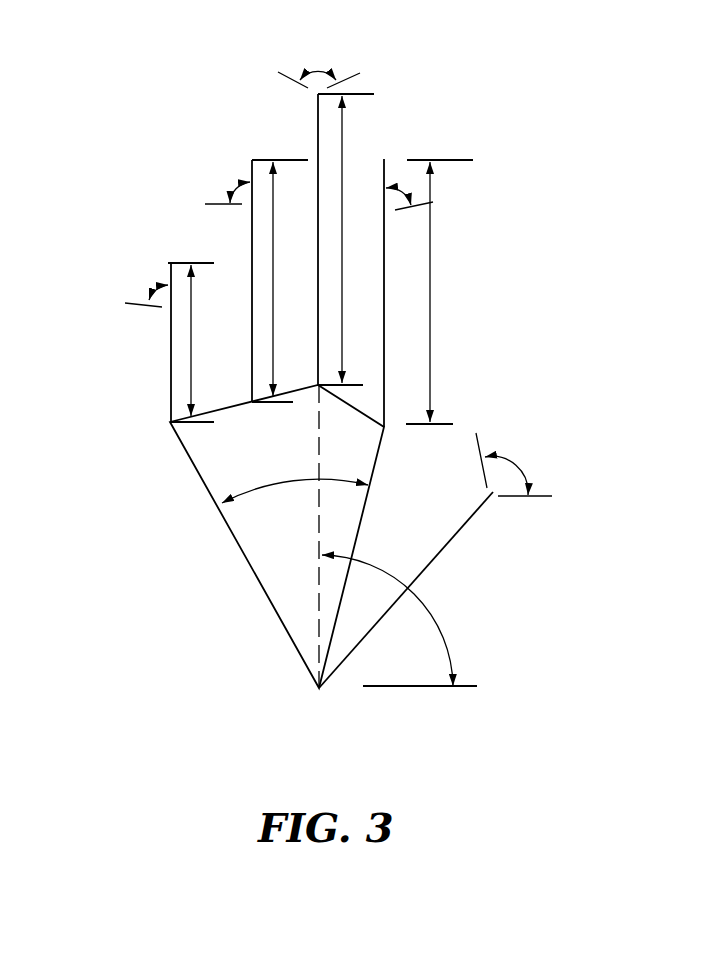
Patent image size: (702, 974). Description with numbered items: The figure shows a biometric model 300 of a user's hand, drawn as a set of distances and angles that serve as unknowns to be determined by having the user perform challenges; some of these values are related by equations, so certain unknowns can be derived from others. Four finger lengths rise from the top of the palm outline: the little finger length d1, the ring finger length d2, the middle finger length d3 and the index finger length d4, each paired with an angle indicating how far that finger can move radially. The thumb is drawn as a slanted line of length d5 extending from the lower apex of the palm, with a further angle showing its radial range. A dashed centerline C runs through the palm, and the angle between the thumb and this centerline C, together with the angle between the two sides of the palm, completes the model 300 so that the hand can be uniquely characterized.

The model 300 is at (71, 21).
The length of the little finger d1 is at (191, 342).
The length of the ring finger d2 is at (280, 281).
The length of the middle finger d3 is at (346, 239).
The length of the index finger d4 is at (439, 292).
The length of the thumb d5 is at (406, 590).
The centerline of the palm C is at (334, 513).